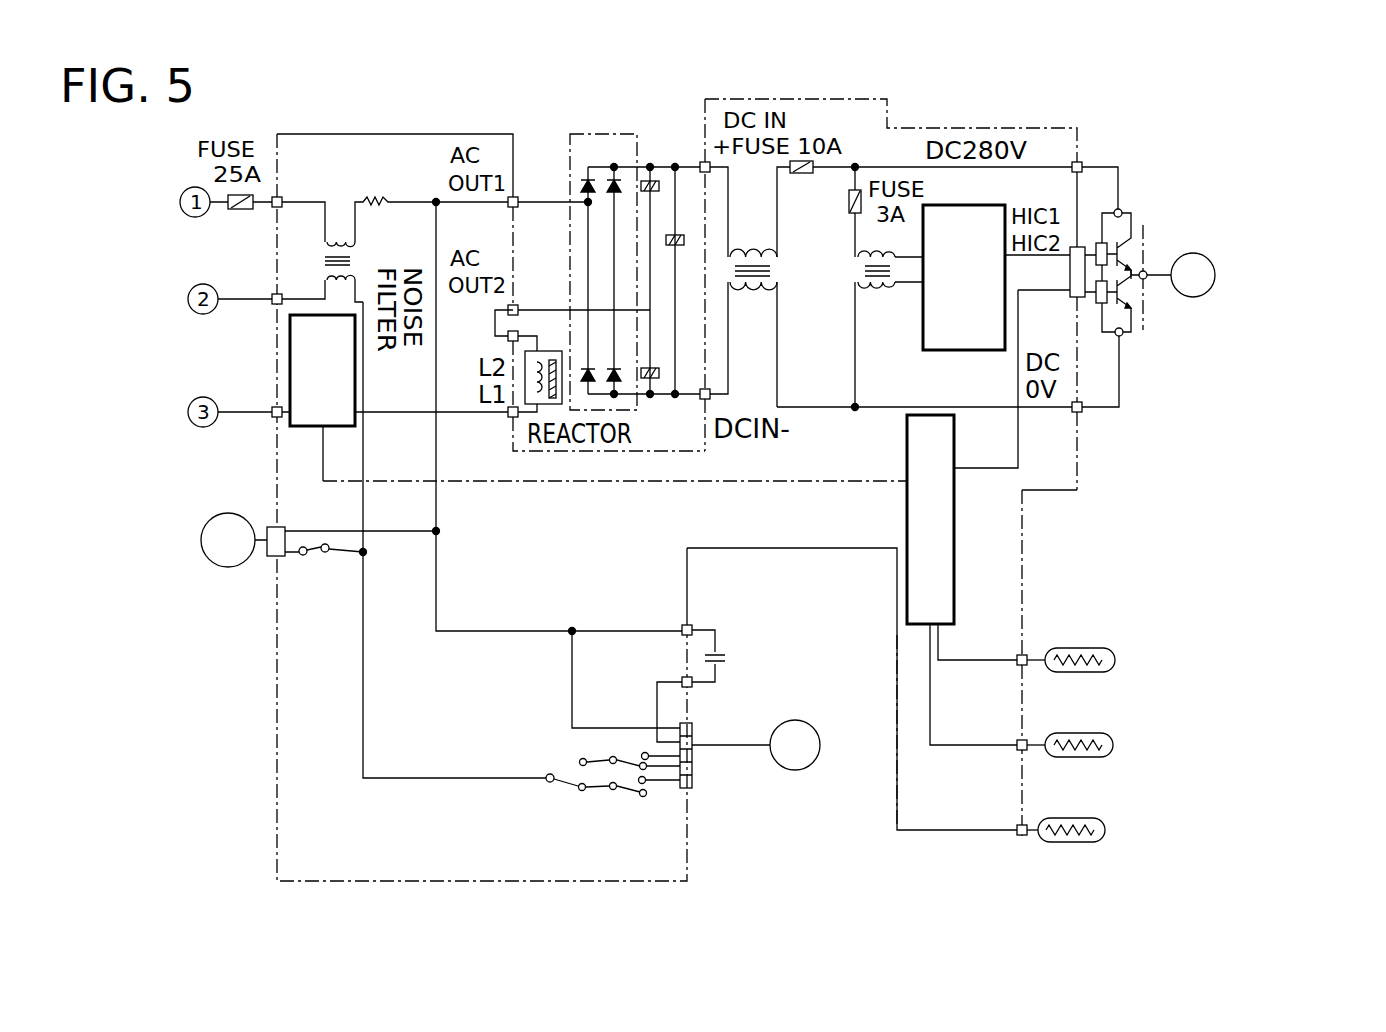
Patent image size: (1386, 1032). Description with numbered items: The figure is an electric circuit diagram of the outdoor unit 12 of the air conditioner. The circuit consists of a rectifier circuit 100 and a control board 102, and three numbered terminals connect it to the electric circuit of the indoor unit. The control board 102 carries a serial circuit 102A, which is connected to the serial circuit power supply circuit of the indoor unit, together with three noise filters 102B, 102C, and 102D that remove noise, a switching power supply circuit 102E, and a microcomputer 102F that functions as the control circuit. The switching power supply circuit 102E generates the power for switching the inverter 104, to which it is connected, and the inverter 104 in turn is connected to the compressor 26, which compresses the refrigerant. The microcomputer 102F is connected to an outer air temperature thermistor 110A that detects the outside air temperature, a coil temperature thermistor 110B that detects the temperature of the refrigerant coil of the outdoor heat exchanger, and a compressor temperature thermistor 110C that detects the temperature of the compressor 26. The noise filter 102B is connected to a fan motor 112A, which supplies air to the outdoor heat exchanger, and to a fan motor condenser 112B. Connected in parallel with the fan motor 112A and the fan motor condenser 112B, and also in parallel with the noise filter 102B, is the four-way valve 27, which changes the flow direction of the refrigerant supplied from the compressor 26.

The outdoor unit 12 is at (303, 96).
The rectifier circuit 100 is at (597, 119).
The control board 102 is at (890, 100).
The serial circuit 102A is at (292, 432).
The noise filter 102B is at (343, 226).
The noise filter 102C is at (781, 273).
The noise filter 102D is at (858, 260).
The switching power supply circuit 102E is at (935, 352).
The microcomputer 102F is at (907, 446).
The inverter 104 is at (1128, 345).
The compressor 26 is at (1200, 298).
The four-way valve 27 is at (200, 515).
The outer air temperature thermistor 110A is at (1117, 660).
The coil temperature thermistor 110B is at (1115, 745).
The compressor temperature thermistor 110C is at (1107, 830).
The fan motor 112A is at (790, 702).
The fan motor condenser 112B is at (722, 645).